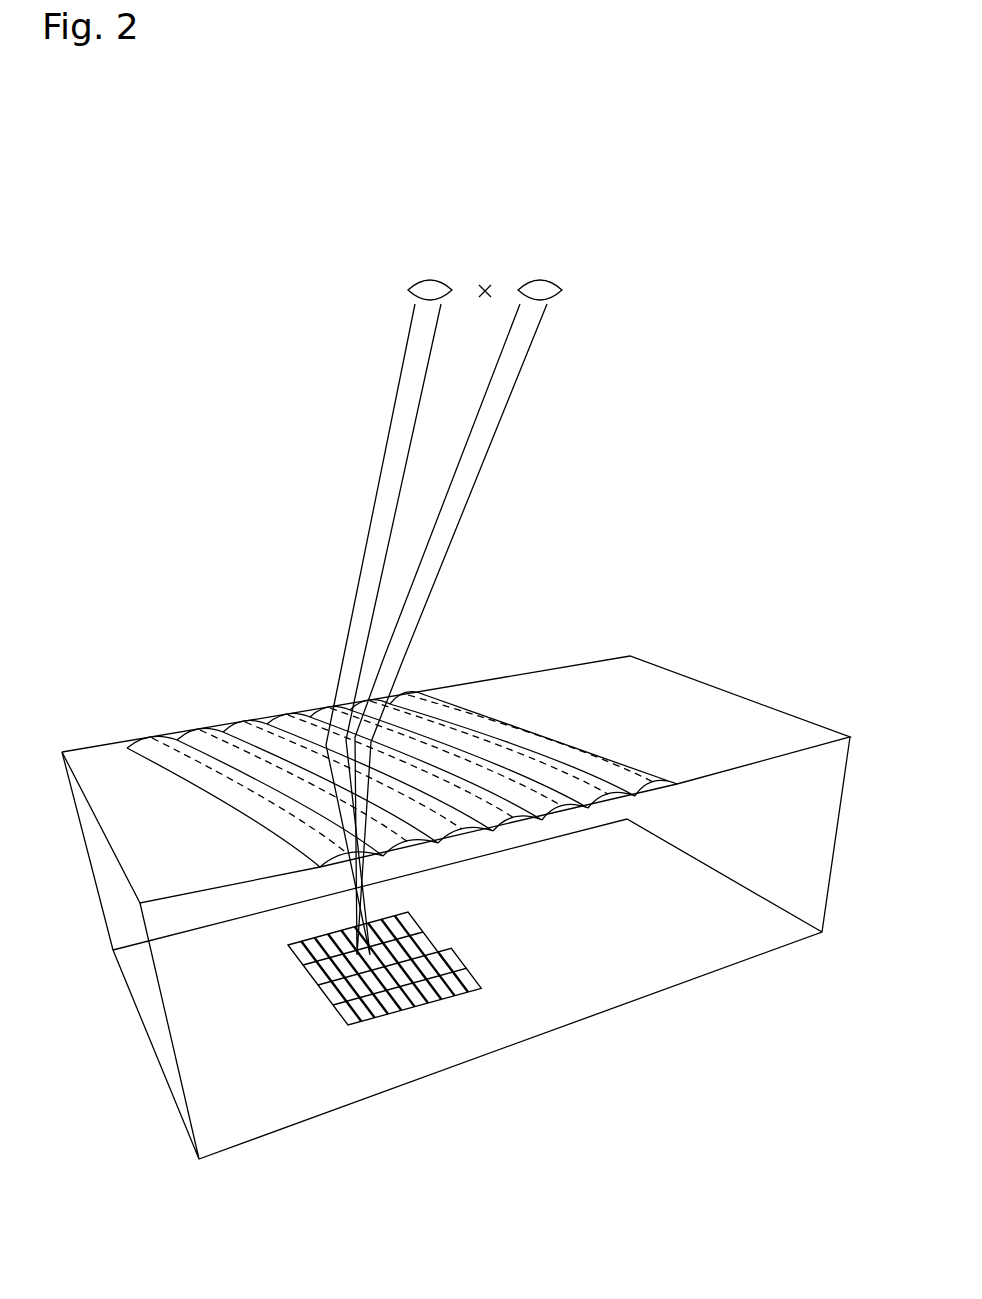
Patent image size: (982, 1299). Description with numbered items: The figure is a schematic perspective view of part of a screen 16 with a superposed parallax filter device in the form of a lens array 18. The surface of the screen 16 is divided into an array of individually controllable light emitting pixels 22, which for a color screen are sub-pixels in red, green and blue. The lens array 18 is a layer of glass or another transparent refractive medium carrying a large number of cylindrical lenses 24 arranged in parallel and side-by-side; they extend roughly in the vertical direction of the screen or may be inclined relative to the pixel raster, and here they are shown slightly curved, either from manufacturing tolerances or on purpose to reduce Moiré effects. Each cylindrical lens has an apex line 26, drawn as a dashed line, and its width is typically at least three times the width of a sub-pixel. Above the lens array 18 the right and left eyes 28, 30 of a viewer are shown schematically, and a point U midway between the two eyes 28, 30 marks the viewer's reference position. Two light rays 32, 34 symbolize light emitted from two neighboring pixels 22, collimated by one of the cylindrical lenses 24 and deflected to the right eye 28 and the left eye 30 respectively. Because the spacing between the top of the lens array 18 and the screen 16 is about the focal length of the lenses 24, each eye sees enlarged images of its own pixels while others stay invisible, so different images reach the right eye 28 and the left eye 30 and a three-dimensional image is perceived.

The screen 16 is at (622, 993).
The lens array 18 is at (565, 667).
The pixels 22 is at (446, 958).
The cylindrical lenses 24 is at (197, 742).
The apex line 26 is at (263, 737).
The right eye 28 is at (542, 281).
The left eye 30 is at (425, 281).
The light ray 32 is at (498, 418).
The light ray 34 is at (395, 450).
The point U is at (486, 283).